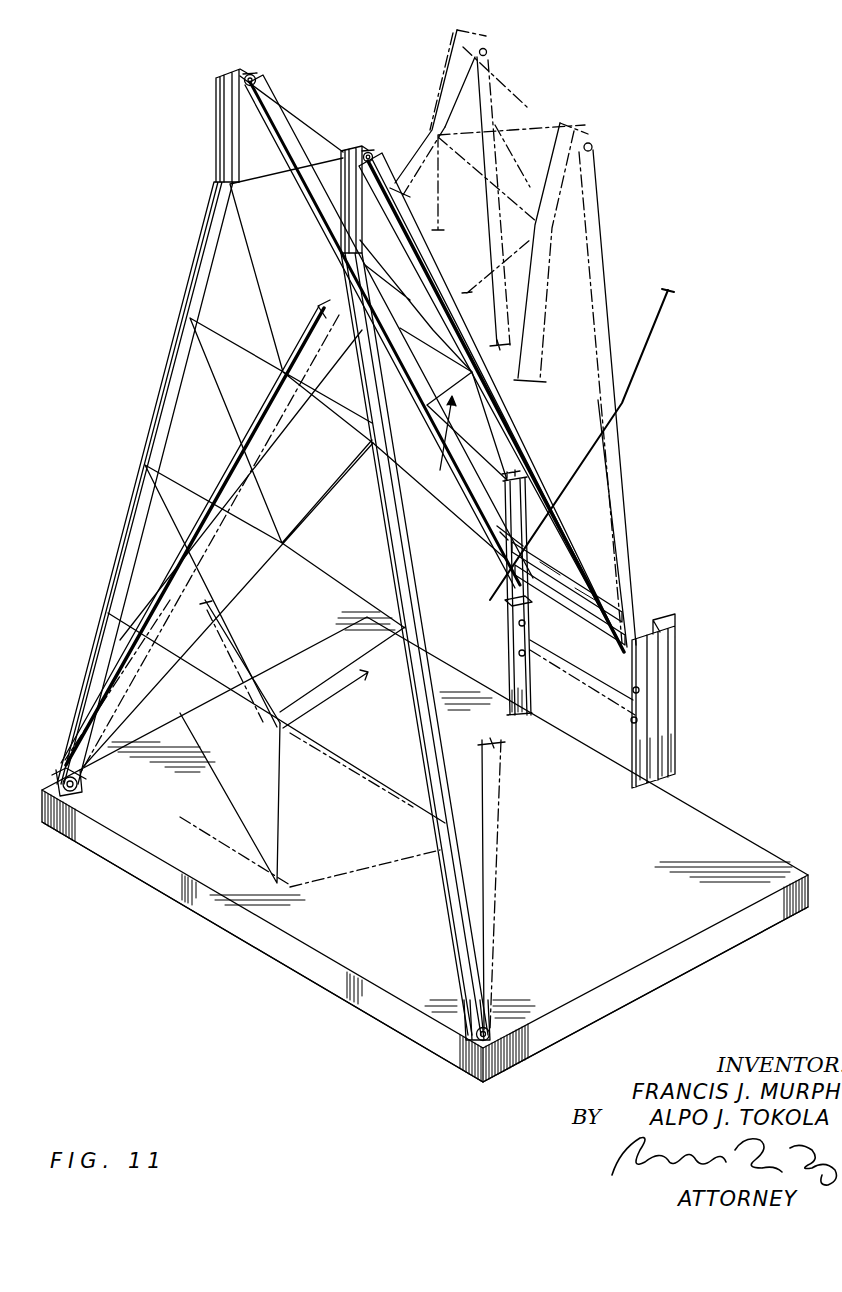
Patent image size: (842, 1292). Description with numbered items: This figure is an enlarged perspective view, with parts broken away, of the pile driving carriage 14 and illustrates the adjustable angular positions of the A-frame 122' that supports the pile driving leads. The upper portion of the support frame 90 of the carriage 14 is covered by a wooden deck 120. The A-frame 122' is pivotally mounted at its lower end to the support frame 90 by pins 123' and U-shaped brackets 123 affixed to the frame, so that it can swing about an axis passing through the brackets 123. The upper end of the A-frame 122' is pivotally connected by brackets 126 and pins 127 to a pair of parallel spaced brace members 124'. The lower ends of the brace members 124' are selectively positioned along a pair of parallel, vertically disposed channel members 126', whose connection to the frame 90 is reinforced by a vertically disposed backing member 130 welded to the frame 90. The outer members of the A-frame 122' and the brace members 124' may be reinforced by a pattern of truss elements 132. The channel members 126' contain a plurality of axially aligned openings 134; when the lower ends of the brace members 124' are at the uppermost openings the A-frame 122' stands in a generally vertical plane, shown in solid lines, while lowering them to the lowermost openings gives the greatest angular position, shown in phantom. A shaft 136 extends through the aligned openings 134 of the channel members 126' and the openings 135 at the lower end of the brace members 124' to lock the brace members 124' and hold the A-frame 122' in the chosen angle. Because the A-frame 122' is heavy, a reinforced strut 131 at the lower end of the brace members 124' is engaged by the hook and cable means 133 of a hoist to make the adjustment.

The carriage 14 is at (638, 947).
The support frame 90 is at (316, 978).
The deck 120 is at (575, 899).
The A-frame 122' is at (350, 530).
The U-shaped brackets 123 is at (265, 940).
The pins 123' is at (308, 904).
The brace members 124' is at (434, 363).
The brackets 126 is at (272, 523).
The channel members 126' is at (552, 598).
The pins 127 is at (257, 84).
The backing member 130 is at (626, 629).
The reinforced strut 131 is at (500, 532).
The truss elements 132 is at (449, 410).
The hook and cable means 133 is at (625, 395).
The openings 134 is at (508, 635).
The openings 135 is at (508, 578).
The shaft 136 is at (583, 612).